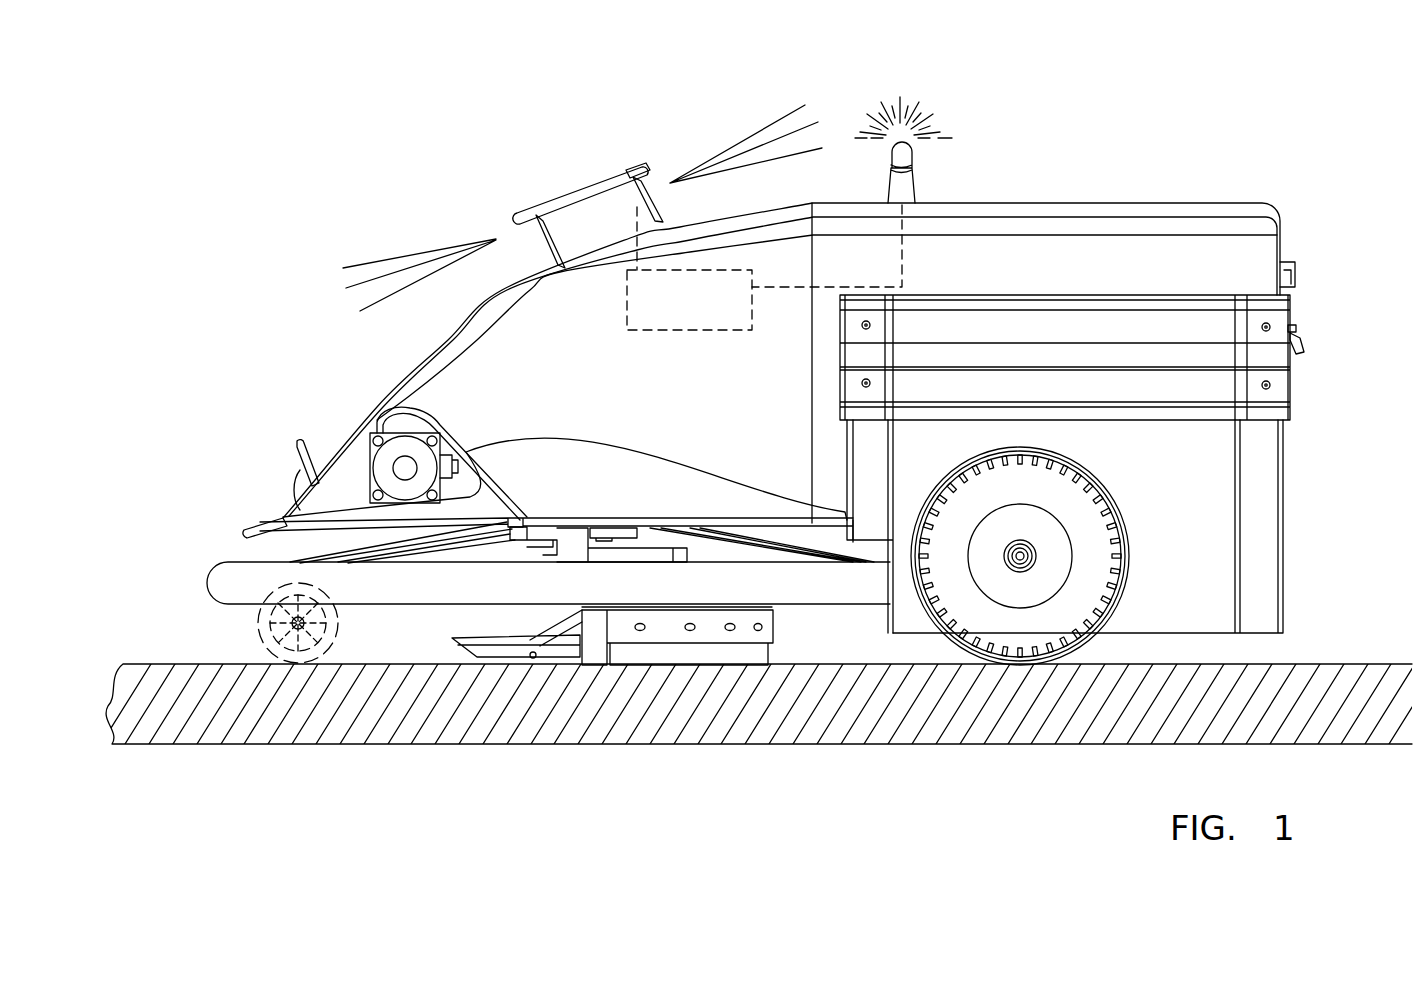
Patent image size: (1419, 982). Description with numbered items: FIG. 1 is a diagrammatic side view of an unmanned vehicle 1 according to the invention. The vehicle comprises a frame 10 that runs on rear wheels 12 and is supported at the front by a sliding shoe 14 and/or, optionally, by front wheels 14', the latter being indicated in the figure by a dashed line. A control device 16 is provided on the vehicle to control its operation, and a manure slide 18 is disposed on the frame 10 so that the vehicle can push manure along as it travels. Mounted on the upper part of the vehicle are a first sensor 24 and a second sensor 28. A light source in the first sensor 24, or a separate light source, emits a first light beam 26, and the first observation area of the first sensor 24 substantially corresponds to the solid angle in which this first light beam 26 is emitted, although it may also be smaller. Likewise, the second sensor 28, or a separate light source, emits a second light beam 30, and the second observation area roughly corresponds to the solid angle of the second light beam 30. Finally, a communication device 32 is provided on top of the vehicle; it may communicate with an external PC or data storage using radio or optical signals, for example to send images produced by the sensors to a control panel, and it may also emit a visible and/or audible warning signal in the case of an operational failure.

The unmanned vehicle 1 is at (1080, 180).
The frame 10 is at (812, 588).
The rear wheels 12 is at (1092, 524).
The sliding shoe 14 is at (485, 723).
The front wheels 14' is at (237, 555).
The control device 16 is at (688, 305).
The manure slide 18 is at (738, 655).
The first sensor 24 is at (540, 221).
The first light beam 26 is at (417, 264).
The second sensor 28 is at (632, 187).
The second light beam 30 is at (742, 153).
The communication device 32 is at (900, 155).